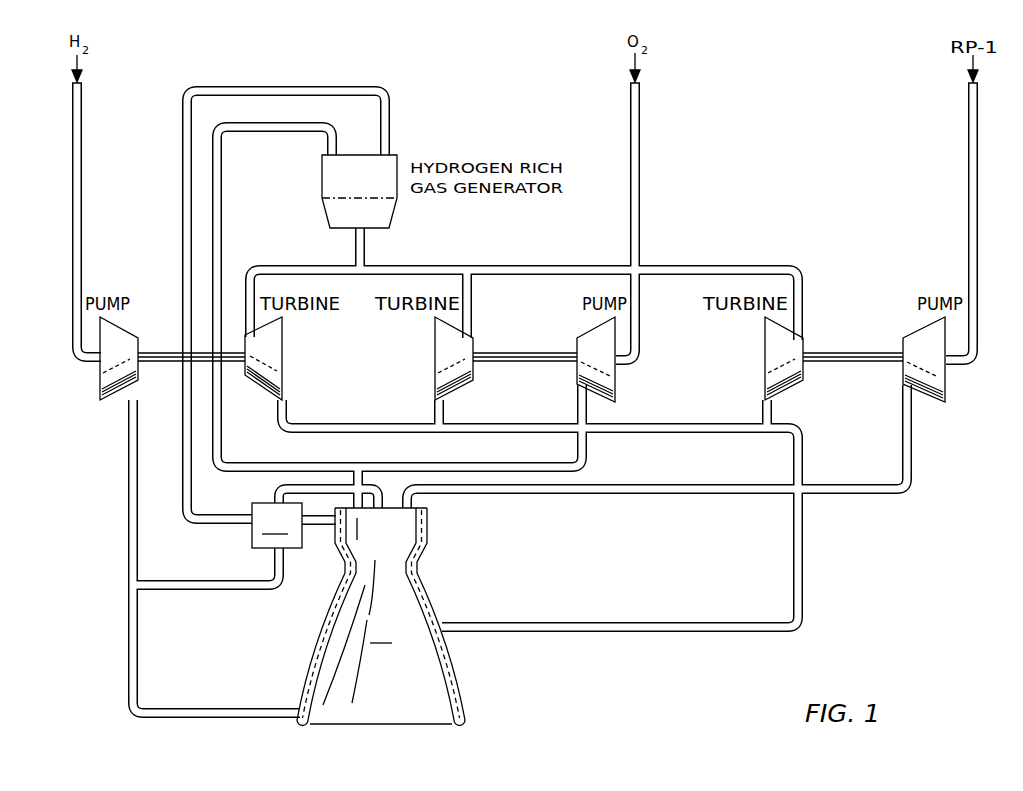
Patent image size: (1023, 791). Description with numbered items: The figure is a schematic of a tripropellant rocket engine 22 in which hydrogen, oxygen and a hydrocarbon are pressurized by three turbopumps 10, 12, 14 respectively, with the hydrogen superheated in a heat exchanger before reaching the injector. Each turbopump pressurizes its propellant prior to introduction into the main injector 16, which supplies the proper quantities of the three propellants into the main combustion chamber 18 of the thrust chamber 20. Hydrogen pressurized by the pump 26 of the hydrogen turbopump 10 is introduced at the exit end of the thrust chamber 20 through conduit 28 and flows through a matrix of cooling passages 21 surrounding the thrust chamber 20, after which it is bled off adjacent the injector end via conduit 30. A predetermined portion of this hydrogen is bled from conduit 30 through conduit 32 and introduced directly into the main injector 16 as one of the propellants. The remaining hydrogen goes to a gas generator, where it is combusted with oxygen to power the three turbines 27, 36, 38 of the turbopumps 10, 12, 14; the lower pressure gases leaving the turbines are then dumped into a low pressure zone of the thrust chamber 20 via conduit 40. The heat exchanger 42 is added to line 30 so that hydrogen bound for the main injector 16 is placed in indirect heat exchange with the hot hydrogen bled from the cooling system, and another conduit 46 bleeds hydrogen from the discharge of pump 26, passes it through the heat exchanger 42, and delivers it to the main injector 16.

The hydrogen turbopump 10 is at (85, 395).
The oxygen turbopump 12 is at (420, 368).
The hydrocarbon turbopump 14 is at (748, 366).
The main injector 16 is at (412, 504).
The main combustion chamber 18 is at (375, 606).
The thrust chamber 20 is at (460, 682).
The cooling passages 21 is at (444, 655).
The rocket engine 22 is at (293, 647).
The hydrogen pump 26 is at (114, 328).
The hydrogen turbine 27 is at (282, 328).
The coolant inlet conduit 28 is at (199, 717).
The coolant bleed conduit 30 is at (182, 466).
The injector hydrogen conduit 32 is at (280, 488).
The oxygen turbine 36 is at (440, 325).
The hydrocarbon turbine 38 is at (770, 327).
The turbine exhaust conduit 40 is at (803, 528).
The heat exchanger 42 is at (229, 537).
The heat exchanger bleed conduit 46 is at (190, 588).